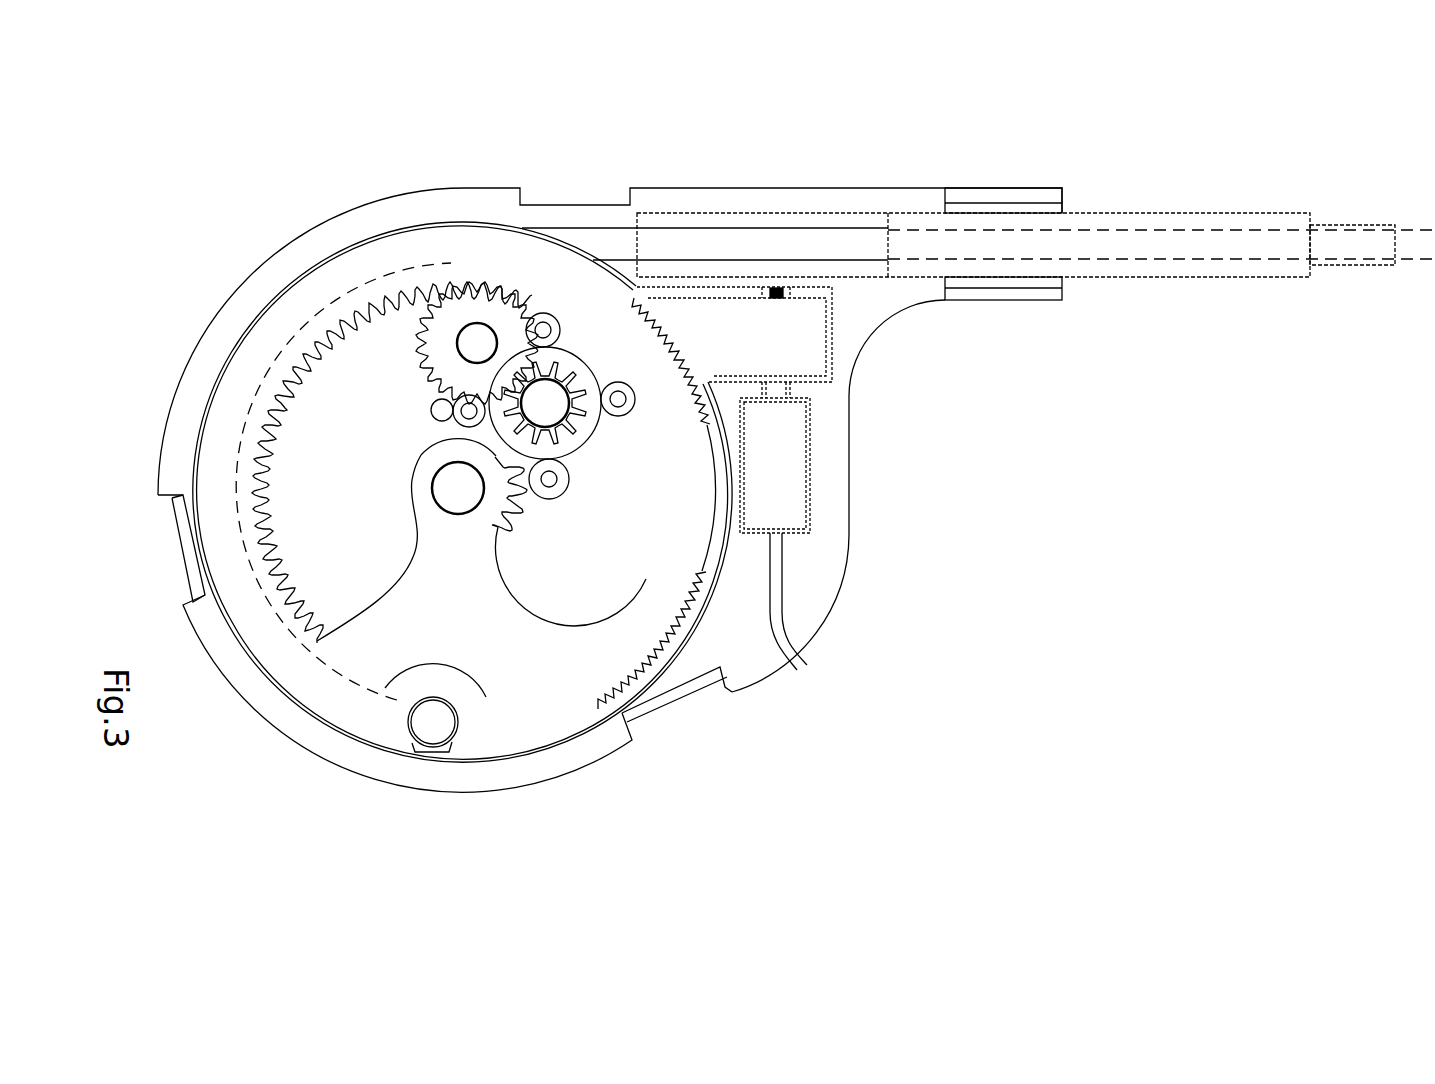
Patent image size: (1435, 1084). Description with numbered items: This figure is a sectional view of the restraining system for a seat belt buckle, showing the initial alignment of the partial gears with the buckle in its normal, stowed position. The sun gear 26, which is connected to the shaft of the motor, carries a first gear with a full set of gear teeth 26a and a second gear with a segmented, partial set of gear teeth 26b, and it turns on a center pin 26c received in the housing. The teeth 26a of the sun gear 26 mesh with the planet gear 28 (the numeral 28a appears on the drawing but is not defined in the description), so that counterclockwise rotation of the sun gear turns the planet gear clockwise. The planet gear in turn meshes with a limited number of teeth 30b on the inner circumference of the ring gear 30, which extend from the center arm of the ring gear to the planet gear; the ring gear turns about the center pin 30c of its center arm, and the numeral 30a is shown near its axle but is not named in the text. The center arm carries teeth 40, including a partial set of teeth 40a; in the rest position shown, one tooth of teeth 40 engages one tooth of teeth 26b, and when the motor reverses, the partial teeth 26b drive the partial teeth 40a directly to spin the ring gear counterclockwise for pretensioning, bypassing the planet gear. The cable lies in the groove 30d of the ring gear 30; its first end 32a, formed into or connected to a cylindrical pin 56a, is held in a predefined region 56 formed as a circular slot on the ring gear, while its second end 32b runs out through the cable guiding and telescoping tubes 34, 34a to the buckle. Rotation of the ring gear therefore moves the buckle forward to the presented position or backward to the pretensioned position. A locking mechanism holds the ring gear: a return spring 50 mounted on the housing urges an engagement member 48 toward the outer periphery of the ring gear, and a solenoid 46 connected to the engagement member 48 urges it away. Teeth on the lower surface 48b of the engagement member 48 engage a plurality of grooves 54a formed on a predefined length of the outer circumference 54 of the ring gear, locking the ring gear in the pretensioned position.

The sun gear 26 is at (556, 360).
The set of gear teeth 26a is at (580, 405).
The partial set of gear teeth 26b is at (557, 487).
The center pin 26c is at (553, 415).
The planet gear 28 is at (443, 343).
The intermediate pinion 28a is at (440, 377).
The ring gear 30 is at (536, 712).
The spool axle 30a is at (456, 493).
The teeth 30b is at (310, 393).
The center pin 30c is at (418, 555).
The groove 30d is at (297, 663).
The first end of the cable 32a is at (440, 723).
The second end of the cable 32b is at (1408, 250).
The cable guiding tube 34 is at (1085, 210).
The cable guiding tube 34a is at (1338, 215).
The teeth 40 is at (513, 507).
The partial set of teeth 40a is at (420, 455).
The solenoid 46 is at (793, 462).
The engagement member 48 is at (815, 328).
The lower surface 48b is at (670, 340).
The return spring 50 is at (793, 292).
The outer circumference 54 is at (663, 650).
The first plurality of grooves 54a is at (692, 372).
The predefined region 56 is at (447, 750).
The cylindrical pin 56a is at (432, 730).